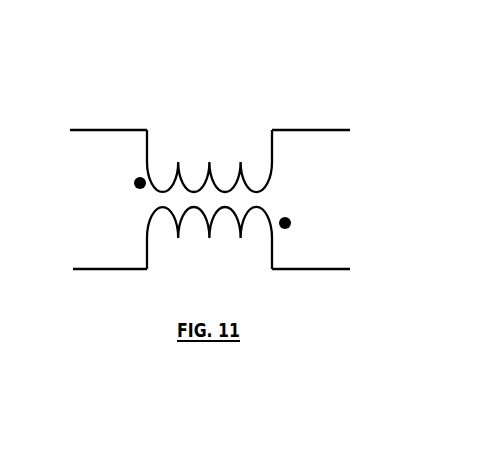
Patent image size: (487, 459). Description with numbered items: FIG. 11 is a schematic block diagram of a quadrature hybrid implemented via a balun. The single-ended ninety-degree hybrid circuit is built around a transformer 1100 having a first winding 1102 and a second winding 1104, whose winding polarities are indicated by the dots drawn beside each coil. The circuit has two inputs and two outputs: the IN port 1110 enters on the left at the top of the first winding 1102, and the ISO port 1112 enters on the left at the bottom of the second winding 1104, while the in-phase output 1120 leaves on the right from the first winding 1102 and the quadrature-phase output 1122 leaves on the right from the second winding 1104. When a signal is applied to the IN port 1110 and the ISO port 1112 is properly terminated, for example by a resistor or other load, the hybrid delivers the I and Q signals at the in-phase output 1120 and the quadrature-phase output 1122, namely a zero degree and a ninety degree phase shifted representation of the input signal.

The transformer 1100 is at (237, 108).
The first winding 1102 is at (284, 147).
The second winding 1104 is at (284, 254).
The IN port 1110 is at (84, 107).
The ISO port 1112 is at (86, 254).
The in-phase output 1120 is at (363, 108).
The quadrature-phase output 1122 is at (360, 252).